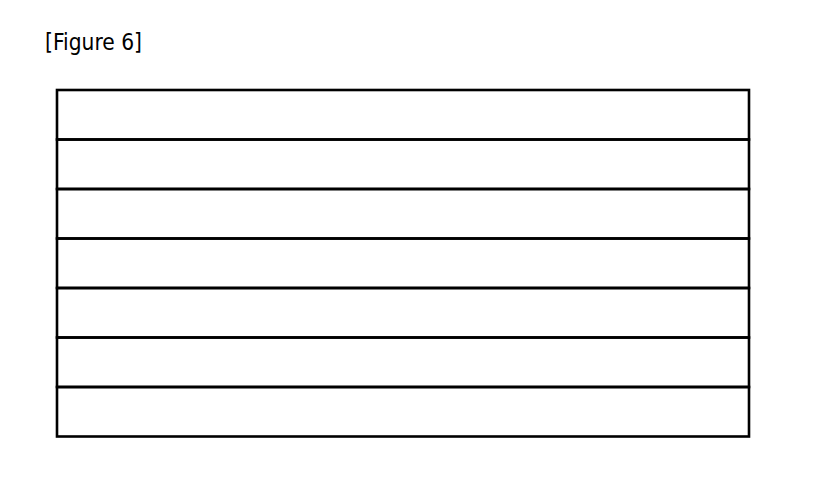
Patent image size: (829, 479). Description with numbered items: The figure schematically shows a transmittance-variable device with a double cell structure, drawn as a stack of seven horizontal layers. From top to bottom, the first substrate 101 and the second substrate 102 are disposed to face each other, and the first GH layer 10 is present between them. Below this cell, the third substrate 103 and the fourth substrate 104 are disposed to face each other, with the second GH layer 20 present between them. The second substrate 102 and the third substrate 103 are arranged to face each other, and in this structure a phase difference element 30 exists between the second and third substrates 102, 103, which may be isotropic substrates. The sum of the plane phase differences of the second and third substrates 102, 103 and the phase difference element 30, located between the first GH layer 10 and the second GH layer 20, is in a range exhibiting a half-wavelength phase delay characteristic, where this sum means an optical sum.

The first substrate 101 is at (403, 115).
The first GH layer 10 is at (403, 165).
The second substrate 102 is at (403, 214).
The phase difference element 30 is at (403, 264).
The third substrate 103 is at (403, 313).
The second GH layer 20 is at (403, 363).
The fourth substrate 104 is at (403, 412).